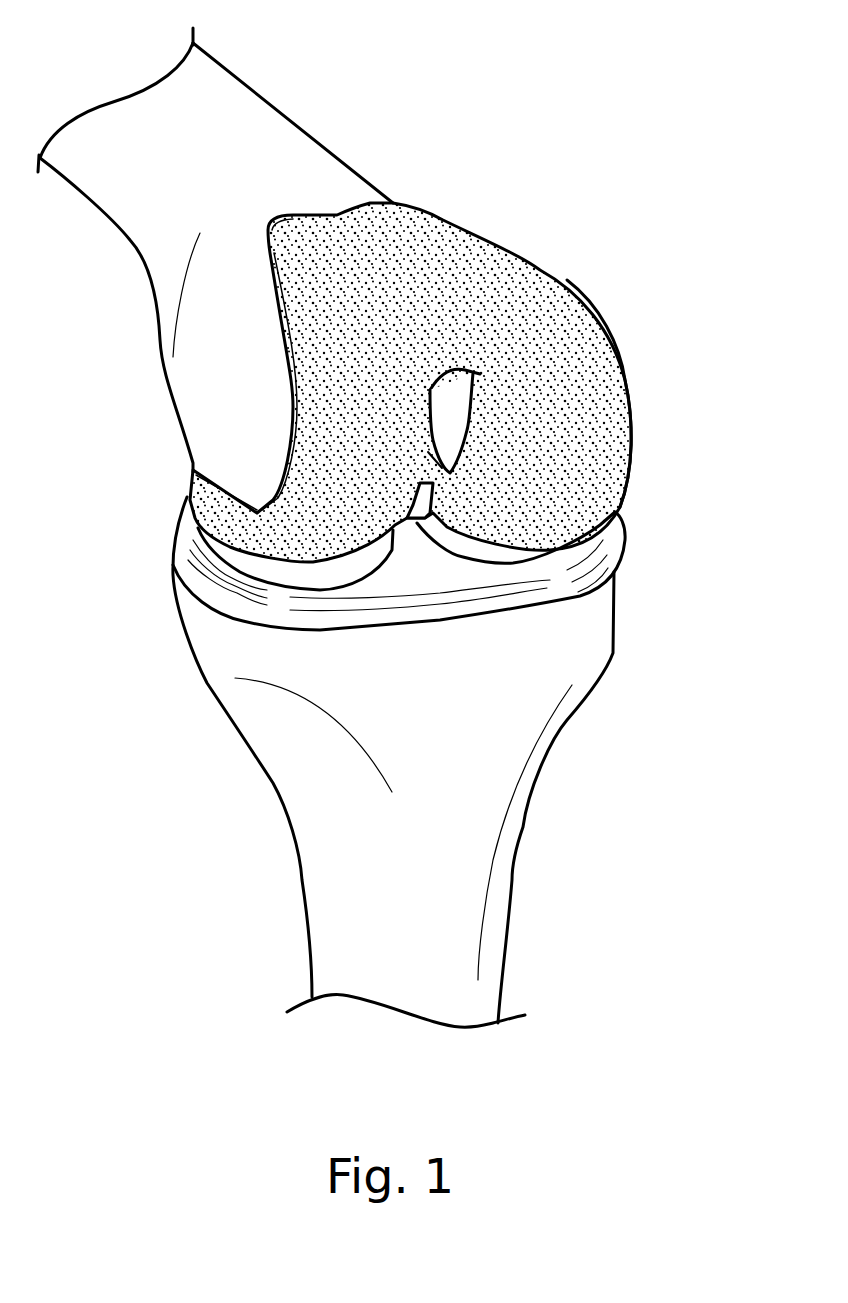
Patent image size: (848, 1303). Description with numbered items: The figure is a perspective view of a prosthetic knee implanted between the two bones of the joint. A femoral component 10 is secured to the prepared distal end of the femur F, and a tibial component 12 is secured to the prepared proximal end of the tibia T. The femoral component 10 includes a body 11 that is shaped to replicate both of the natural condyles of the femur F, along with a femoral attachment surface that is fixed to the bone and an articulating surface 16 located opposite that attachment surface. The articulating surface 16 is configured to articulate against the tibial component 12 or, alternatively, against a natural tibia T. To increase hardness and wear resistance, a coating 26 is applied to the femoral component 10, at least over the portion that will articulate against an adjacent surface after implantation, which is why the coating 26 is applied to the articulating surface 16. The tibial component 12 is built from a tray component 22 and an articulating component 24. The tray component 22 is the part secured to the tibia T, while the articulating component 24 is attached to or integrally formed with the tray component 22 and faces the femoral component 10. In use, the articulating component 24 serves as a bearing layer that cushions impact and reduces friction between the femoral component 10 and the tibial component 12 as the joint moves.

The femur F is at (253, 123).
The tibia T is at (313, 827).
The femoral component 10 is at (462, 339).
The body 11 is at (413, 283).
The articulating surface 16 is at (567, 428).
The coating 26 is at (616, 367).
The tibial component 12 is at (503, 587).
The tray component 22 is at (359, 654).
The articulating component 24 is at (250, 563).